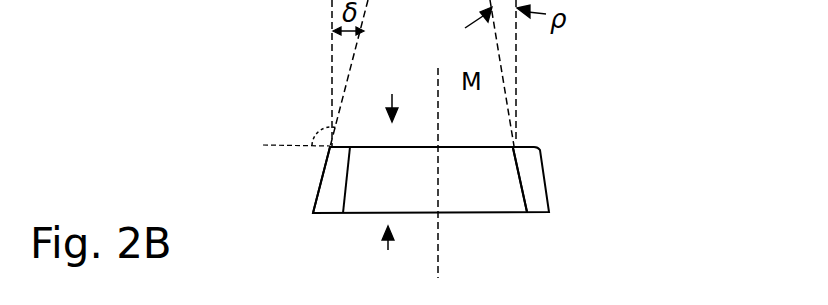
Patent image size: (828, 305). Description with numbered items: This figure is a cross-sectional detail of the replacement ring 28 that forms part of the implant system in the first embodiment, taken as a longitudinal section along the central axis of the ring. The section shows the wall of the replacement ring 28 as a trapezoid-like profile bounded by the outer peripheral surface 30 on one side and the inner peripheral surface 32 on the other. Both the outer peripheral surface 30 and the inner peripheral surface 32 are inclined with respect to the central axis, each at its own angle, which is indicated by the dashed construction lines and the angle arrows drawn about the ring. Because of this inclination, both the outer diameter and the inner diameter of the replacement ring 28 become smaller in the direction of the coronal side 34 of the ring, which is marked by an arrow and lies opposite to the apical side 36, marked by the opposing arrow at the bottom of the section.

The replacement ring 28 is at (575, 110).
The outer peripheral surface 30 is at (322, 183).
The inner peripheral surface 32 is at (520, 192).
The coronal side 34 is at (396, 94).
The apical side 36 is at (388, 258).